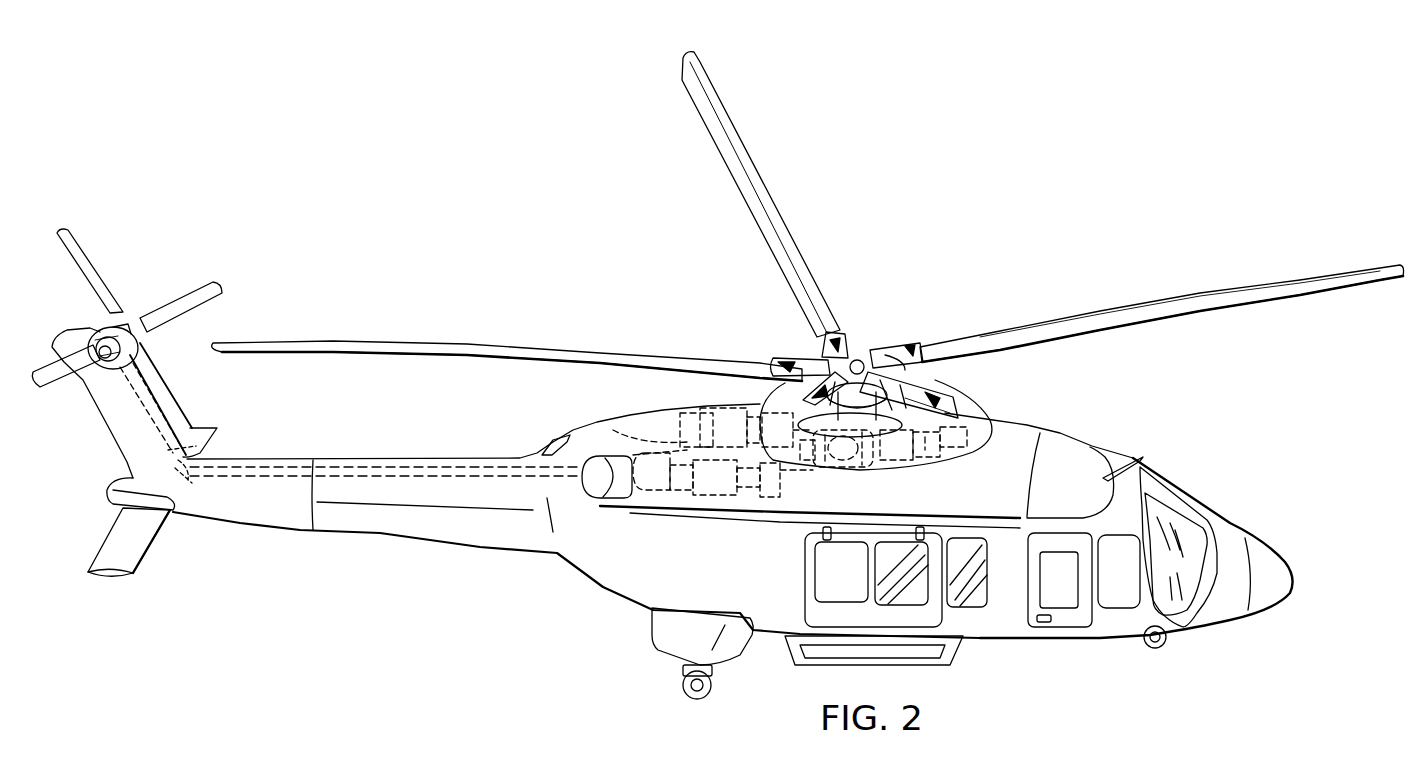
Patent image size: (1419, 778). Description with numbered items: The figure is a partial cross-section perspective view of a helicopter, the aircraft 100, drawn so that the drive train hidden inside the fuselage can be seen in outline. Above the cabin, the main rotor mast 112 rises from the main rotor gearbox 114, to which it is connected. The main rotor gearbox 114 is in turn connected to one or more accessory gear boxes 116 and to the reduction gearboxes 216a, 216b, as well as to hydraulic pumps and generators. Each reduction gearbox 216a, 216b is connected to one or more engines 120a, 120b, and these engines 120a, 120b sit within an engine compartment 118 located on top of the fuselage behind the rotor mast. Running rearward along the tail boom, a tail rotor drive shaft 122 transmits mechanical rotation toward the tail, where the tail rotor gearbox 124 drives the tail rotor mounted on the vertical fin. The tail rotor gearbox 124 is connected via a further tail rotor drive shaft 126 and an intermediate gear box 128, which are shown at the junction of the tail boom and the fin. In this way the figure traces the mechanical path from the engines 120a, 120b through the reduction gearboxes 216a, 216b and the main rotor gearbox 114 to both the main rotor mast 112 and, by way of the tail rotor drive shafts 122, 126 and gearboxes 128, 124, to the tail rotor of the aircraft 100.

The aircraft 100 is at (1081, 101).
The main rotor mast 112 is at (826, 465).
The main rotor gearbox 114 is at (870, 455).
The accessory gear box 116 is at (937, 465).
The engine compartment 118 is at (737, 403).
The engine 120a is at (702, 490).
The engine 120b is at (713, 403).
The reduction gearbox 216a is at (762, 497).
The reduction gearbox 216b is at (766, 400).
The tail rotor drive shaft 122 is at (398, 462).
The tail rotor gearbox 124 is at (92, 328).
The tail rotor drive shaft 126 is at (167, 412).
The intermediate gear box 128 is at (180, 477).